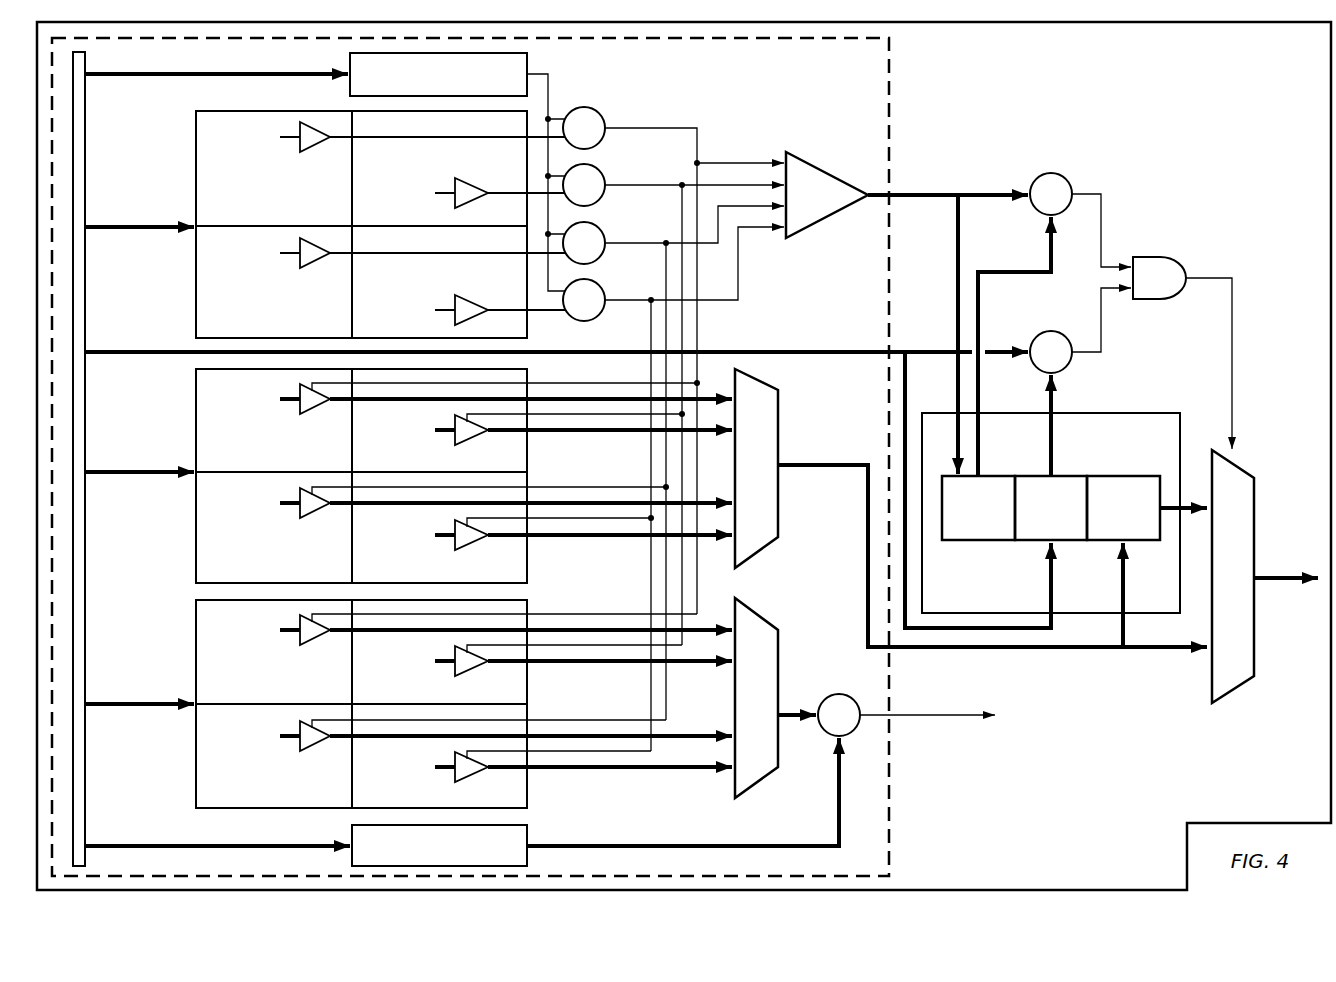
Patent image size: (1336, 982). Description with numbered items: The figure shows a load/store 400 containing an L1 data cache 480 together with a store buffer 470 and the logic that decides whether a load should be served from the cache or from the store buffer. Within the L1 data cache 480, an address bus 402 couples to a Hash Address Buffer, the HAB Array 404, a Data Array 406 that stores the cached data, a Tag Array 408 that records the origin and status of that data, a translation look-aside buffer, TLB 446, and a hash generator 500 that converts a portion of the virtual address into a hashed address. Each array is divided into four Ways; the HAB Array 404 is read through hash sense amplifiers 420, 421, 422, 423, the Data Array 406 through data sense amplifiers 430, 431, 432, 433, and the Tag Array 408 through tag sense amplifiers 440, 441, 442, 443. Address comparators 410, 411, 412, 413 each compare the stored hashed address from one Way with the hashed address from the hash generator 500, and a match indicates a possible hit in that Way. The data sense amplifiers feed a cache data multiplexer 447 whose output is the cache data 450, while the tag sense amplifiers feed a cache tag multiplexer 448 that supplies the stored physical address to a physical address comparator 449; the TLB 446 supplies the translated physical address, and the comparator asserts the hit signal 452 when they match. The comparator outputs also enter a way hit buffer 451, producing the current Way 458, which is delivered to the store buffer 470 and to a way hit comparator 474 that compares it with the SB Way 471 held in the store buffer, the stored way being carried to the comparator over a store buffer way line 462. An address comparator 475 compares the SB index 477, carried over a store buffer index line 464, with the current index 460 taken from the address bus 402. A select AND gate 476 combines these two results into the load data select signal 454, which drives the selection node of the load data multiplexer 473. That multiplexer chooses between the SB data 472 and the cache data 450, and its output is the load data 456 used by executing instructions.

The load/store 400 is at (1118, 109).
The address bus 402 is at (88, 339).
The Hash Address Buffer (HAB Array) 404 is at (193, 171).
The Data Array 406 is at (193, 440).
The Tag Array 408 is at (193, 648).
The address comparator 410 is at (603, 108).
The address comparator 411 is at (603, 166).
The address comparator 412 is at (603, 224).
The address comparator 413 is at (603, 282).
The hash sense amplifiers 420 is at (298, 148).
The hash sense amplifiers 421 is at (453, 184).
The hash sense amplifiers 422 is at (298, 264).
The hash sense amplifiers 423 is at (453, 301).
The data sense amplifiers 430 is at (298, 409).
The data sense amplifiers 431 is at (455, 440).
The data sense amplifiers 432 is at (298, 513).
The data sense amplifiers 433 is at (455, 546).
The tag sense amplifiers 440 is at (298, 640).
The tag sense amplifiers 441 is at (455, 673).
The tag sense amplifiers 442 is at (298, 745).
The tag sense amplifiers 443 is at (455, 778).
The translation look-aside buffer (TLB) 446 is at (528, 833).
The cache data multiplexer 447 is at (755, 553).
The cache tag multiplexer 448 is at (760, 783).
The physical address comparator 449 is at (834, 693).
The cache data 450 is at (818, 470).
The way hit buffer 451 is at (827, 170).
The hit signal 452 is at (937, 717).
The load data select signal 454 is at (1230, 274).
The load data 456 is at (1276, 576).
The current Way 458 is at (947, 191).
The current index 460 is at (826, 350).
The store buffer way signal 462 is at (1050, 252).
The store buffer index signal 464 is at (1052, 407).
The store buffer 470 is at (1180, 430).
The SB Way 471 is at (997, 477).
The SB data 472 is at (1130, 477).
The load data multiplexer 473 is at (1233, 693).
The way hit comparator 474 is at (1062, 176).
The address comparator 475 is at (1066, 333).
The select AND gate 476 is at (1165, 301).
The SB index 477 is at (1070, 477).
The L1 data cache 480 is at (781, 109).
The hash generator 500 is at (528, 63).